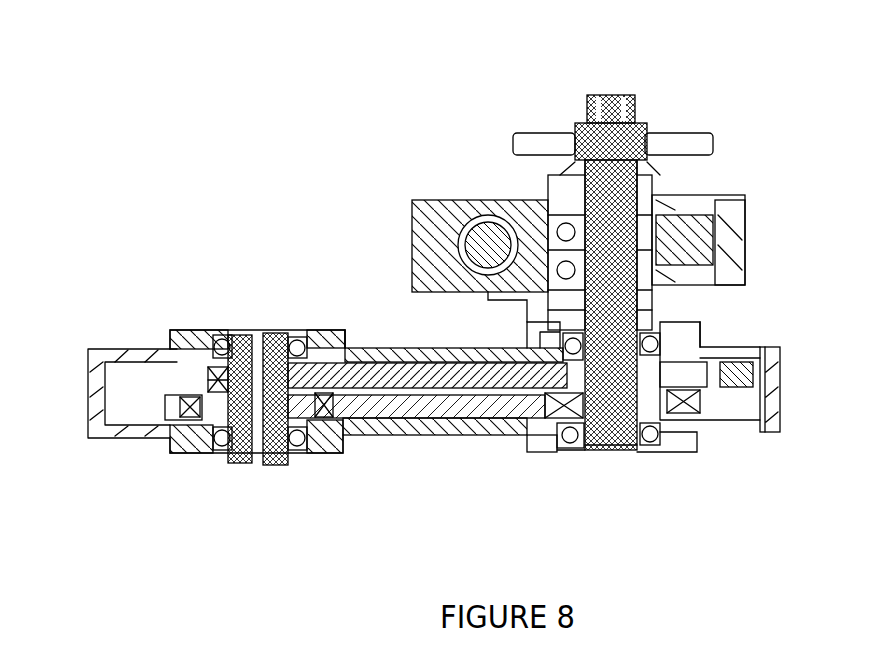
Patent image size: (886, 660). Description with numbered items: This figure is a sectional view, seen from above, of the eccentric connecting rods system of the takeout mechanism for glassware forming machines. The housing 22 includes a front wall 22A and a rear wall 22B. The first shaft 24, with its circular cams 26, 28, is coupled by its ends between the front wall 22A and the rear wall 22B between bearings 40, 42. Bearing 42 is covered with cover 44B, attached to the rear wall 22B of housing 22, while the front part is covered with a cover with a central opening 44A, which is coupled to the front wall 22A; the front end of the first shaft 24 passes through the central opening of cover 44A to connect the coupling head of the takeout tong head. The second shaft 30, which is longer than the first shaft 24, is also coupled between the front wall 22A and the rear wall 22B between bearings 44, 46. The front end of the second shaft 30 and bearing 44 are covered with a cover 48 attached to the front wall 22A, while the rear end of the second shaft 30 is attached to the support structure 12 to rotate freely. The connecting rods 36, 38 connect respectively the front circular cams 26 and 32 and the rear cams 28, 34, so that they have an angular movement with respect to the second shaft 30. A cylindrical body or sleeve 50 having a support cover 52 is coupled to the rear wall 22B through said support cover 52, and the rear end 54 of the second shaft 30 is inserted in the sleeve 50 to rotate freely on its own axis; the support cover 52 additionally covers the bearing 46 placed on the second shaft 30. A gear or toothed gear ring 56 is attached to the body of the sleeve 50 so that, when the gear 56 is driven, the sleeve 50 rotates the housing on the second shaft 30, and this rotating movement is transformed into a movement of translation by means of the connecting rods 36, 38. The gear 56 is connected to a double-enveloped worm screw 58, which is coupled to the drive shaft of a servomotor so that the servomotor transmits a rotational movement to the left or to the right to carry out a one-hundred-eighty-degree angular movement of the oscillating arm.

The support structure 12 is at (437, 228).
The housing 22 is at (434, 374).
The front wall 22A is at (130, 430).
The rear wall 22B is at (130, 349).
The first shaft 24 is at (273, 433).
The front circular cam 26 is at (217, 408).
The rear circular cam 28 is at (342, 340).
The second shaft 30 is at (615, 418).
The front cam 32 is at (568, 407).
The rear cam 34 is at (730, 364).
The connecting rod 36 is at (468, 418).
The connecting rod 38 is at (420, 373).
The bearing 40 is at (217, 452).
The bearing 42 is at (215, 338).
The bearing 44 is at (658, 437).
The cover with central opening 44A is at (318, 452).
The cover 44B is at (283, 330).
The bearing 46 is at (653, 345).
The cover 48 is at (558, 445).
The cylindrical body or sleeve 50 is at (653, 218).
The support cover 52 is at (527, 330).
The rear end of the second shaft 54 is at (617, 212).
The gear or toothed gear ring 56 is at (540, 250).
The double-enveloped worm screw 58 is at (486, 236).